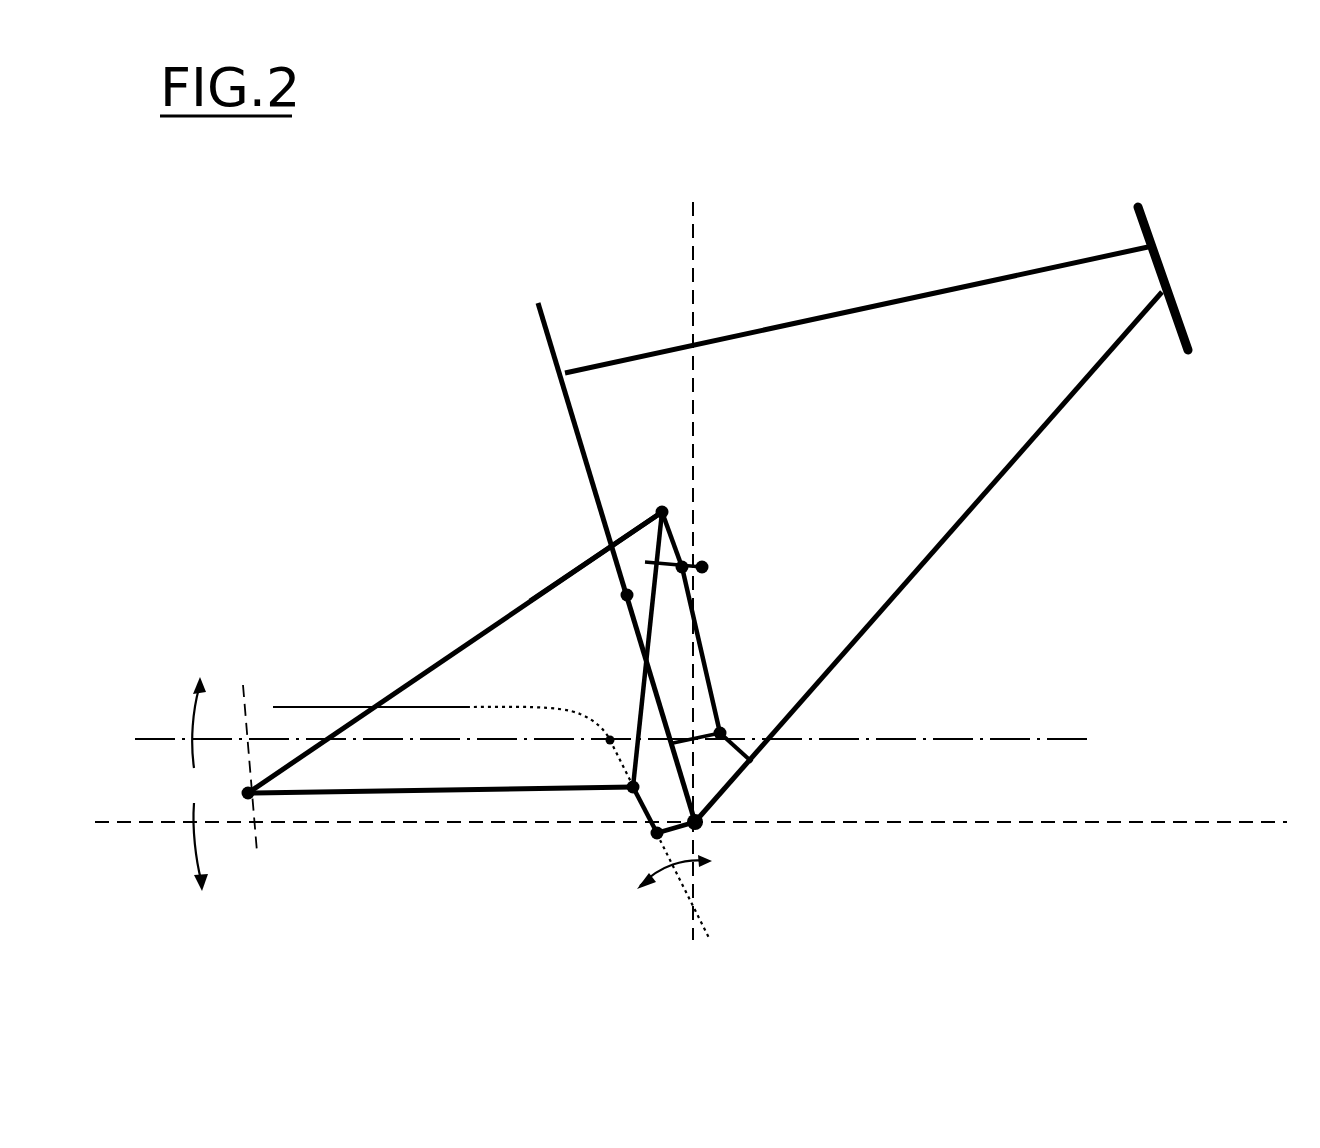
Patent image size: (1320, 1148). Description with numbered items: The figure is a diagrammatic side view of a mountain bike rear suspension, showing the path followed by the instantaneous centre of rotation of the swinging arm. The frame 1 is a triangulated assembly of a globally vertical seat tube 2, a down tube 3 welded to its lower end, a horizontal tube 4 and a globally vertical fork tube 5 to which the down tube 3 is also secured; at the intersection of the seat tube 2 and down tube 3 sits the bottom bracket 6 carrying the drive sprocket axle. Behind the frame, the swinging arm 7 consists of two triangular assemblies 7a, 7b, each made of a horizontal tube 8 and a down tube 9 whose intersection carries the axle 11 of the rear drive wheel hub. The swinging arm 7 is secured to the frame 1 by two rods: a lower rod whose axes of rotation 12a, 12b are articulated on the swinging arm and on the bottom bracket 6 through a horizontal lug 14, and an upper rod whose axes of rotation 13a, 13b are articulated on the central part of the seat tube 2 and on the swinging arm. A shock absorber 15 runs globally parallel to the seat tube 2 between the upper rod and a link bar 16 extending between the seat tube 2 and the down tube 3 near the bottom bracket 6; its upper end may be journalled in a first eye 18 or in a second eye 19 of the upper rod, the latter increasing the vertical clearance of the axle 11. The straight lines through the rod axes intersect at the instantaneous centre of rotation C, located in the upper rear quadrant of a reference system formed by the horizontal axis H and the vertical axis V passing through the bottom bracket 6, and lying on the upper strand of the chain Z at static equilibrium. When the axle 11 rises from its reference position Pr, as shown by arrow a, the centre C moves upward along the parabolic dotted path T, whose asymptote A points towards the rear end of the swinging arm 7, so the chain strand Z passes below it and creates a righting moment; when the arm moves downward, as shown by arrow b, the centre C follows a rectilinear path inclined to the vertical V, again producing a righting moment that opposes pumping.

The frame 1 is at (857, 477).
The seat tube 2 is at (545, 345).
The down tube 3 is at (1025, 452).
The horizontal tube 4 is at (827, 313).
The fork tube 5 is at (1157, 261).
The bottom bracket 6 is at (705, 818).
The swinging arm 7 is at (373, 694).
The triangular assembly 7a is at (455, 652).
The triangular assembly 7b is at (452, 648).
The horizontal tube 8 is at (460, 795).
The down tube 9 is at (527, 597).
The axle 11 is at (252, 798).
The axis of rotation 12a is at (630, 790).
The axis of rotation 12b is at (652, 838).
The axis of rotation 13a is at (624, 592).
The axis of rotation 13b is at (658, 505).
The horizontal lug 14 is at (700, 840).
The shock absorber 15 is at (707, 665).
The link bar 16 is at (700, 742).
The eye 18 is at (683, 560).
The second eye 19 is at (708, 563).
The vertical axis V is at (692, 270).
The horizontal axis H is at (1200, 823).
The upper strand of the chain Z is at (1062, 740).
The asymptote A is at (294, 706).
The parabolic curved path T is at (490, 707).
The instantaneous centre of rotation C is at (608, 742).
The reference position Pr is at (246, 793).
The arrow a is at (183, 722).
The arrow b is at (186, 847).